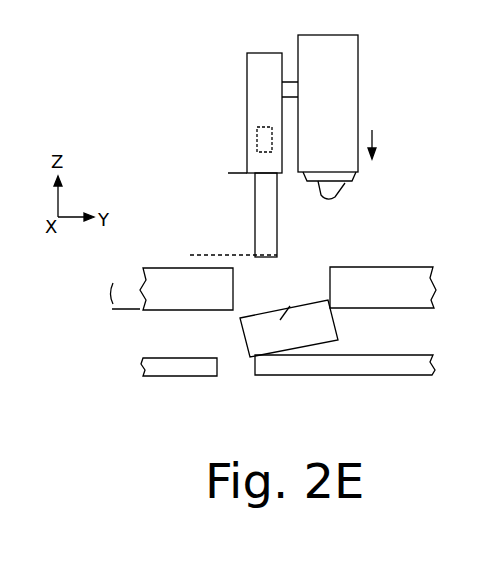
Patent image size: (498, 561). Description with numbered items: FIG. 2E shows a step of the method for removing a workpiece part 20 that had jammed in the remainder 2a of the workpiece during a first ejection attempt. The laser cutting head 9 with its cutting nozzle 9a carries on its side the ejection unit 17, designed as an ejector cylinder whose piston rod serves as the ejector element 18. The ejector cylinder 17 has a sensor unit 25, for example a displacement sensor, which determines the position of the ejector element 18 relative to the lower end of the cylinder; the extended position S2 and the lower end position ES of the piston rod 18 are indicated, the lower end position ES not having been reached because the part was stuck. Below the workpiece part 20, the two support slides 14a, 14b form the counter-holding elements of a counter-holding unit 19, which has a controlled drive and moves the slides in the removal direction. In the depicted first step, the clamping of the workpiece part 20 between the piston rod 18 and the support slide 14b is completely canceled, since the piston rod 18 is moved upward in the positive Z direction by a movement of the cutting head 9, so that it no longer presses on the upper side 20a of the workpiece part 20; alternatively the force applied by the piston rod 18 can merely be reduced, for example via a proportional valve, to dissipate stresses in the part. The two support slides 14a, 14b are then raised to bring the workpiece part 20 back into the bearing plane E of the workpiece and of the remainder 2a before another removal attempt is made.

The laser cutting head 9 is at (347, 63).
The cutting nozzle 9a is at (340, 194).
The ejection unit 17 is at (262, 72).
The sensor unit 25 is at (253, 130).
The ejector element 18 is at (261, 207).
The remainder of the workpiece 2a is at (392, 278).
The workpiece part 20 is at (252, 332).
The upper side of the workpiece part 20a is at (285, 304).
The support slide 14a is at (182, 372).
The support slide 14b is at (343, 365).
The counter-holding unit 19 is at (120, 366).
The bearing plane E is at (170, 282).
The second, extended position S2 is at (220, 254).
The lower end position ES is at (233, 317).